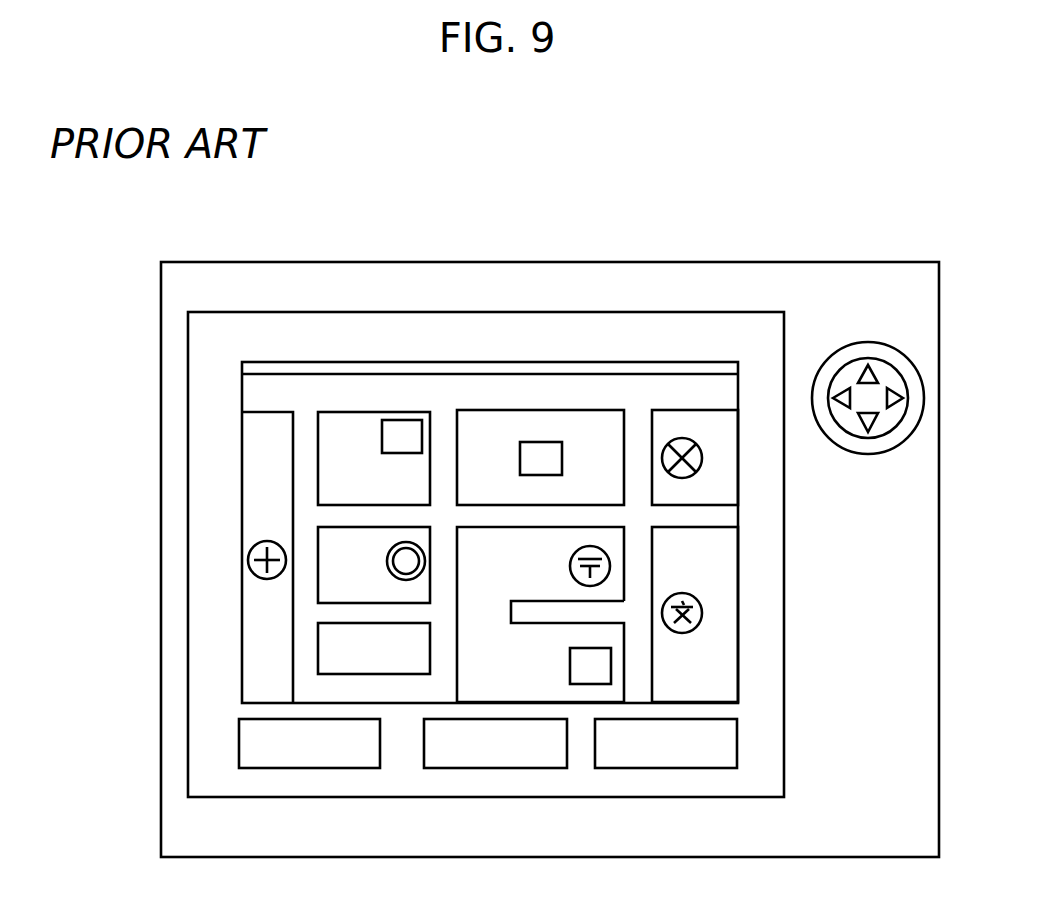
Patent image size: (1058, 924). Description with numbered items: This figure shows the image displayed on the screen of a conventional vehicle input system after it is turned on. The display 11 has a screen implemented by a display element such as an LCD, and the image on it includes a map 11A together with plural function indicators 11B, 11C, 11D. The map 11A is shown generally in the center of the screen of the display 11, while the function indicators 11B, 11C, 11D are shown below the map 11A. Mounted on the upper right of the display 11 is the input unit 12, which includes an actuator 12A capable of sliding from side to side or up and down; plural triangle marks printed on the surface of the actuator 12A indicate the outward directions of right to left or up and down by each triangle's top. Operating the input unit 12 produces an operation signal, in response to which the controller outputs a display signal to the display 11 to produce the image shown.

The display 11 is at (246, 332).
The map 11A is at (441, 378).
The function indicator 11B is at (303, 768).
The function indicator 11C is at (493, 768).
The function indicator 11D is at (670, 768).
The input unit 12 is at (829, 358).
The actuator 12A is at (854, 373).